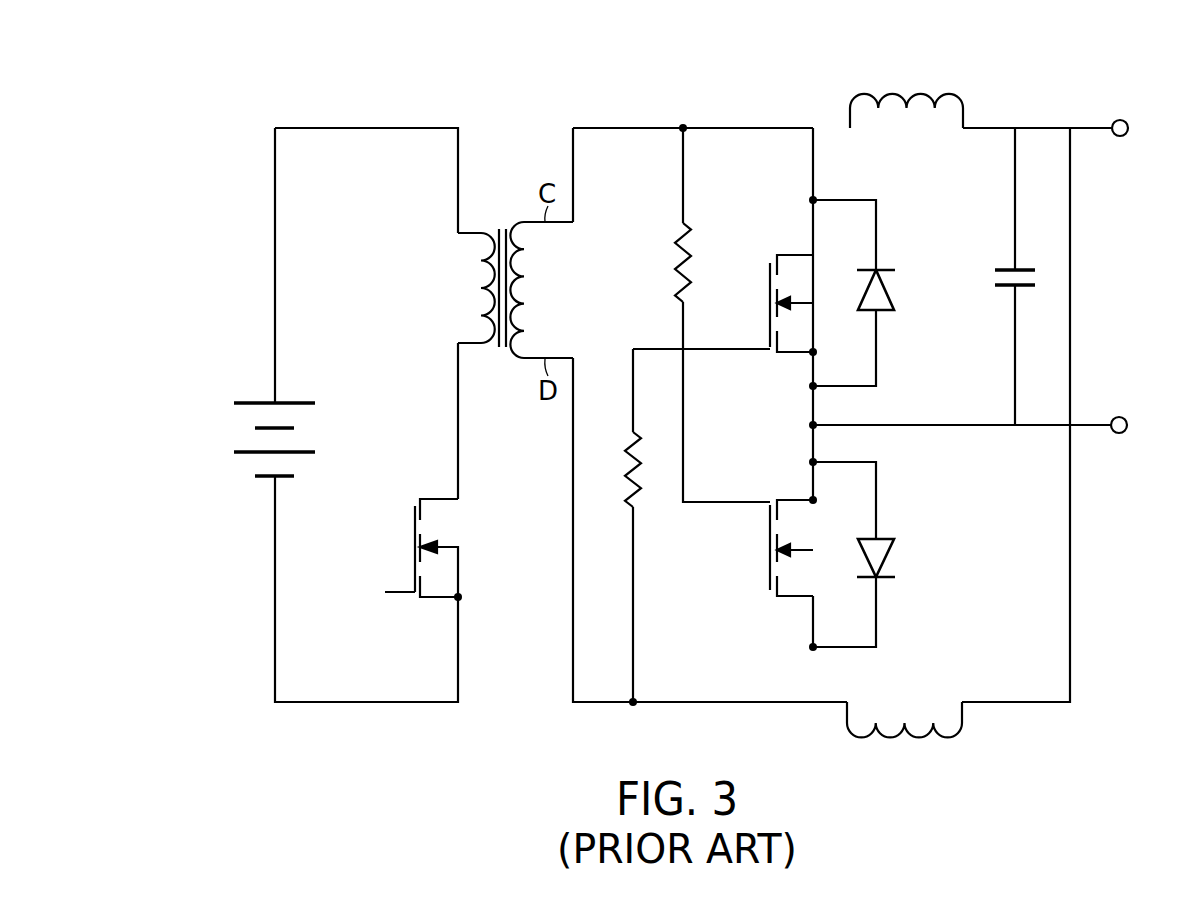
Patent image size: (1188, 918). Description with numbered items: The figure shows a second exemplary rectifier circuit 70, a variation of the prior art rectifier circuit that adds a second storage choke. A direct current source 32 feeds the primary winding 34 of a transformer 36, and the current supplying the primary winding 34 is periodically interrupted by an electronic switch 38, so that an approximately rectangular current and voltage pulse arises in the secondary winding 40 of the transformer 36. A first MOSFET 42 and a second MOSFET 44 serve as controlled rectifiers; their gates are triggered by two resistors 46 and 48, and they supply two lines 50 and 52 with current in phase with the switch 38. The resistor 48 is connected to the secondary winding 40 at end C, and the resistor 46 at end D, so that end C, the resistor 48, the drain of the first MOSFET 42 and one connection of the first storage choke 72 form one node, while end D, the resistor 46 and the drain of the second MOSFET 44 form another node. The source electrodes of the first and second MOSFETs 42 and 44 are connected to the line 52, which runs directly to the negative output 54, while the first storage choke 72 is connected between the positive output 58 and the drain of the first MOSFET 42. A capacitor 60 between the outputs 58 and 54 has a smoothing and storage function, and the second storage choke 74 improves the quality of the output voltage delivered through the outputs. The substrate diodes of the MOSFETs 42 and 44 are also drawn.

The direct current source 32 is at (238, 450).
The primary winding 34 is at (477, 289).
The transformer 36 is at (502, 350).
The electronic switch 38 is at (411, 528).
The secondary winding 40 is at (528, 273).
The first MOSFET 42 is at (767, 287).
The second MOSFET 44 is at (768, 552).
The resistor 46 is at (627, 474).
The resistor 48 is at (677, 266).
The line 50 is at (724, 127).
The line 52 is at (942, 428).
The negative output 54 is at (1126, 420).
The positive output 58 is at (1128, 122).
The capacitor 60 is at (1000, 267).
The second exemplary rectifier circuit 70 is at (1036, 48).
The first storage choke 72 is at (922, 94).
The second storage choke 74 is at (950, 740).